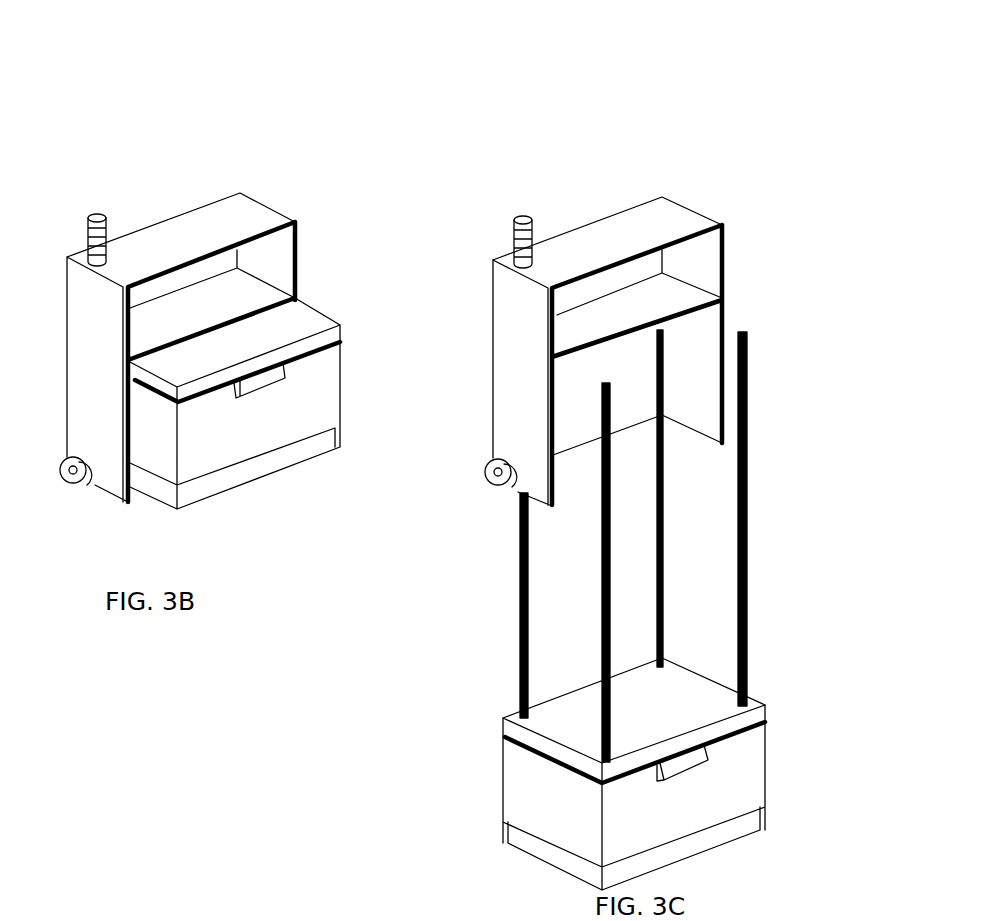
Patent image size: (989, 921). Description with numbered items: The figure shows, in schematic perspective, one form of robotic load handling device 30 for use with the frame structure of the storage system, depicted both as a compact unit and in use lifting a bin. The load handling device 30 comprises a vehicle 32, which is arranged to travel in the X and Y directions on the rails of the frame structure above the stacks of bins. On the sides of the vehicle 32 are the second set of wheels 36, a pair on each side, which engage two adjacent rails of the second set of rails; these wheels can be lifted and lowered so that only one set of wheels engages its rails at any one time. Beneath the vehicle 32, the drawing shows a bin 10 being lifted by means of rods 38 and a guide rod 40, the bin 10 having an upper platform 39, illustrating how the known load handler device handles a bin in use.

In FIG. 3B, the battery pack 10 is at (222, 430).
In FIG. 3C, the battery pack 10 is at (700, 812).
In FIG. 3B, the load handling device 30 is at (269, 147).
In FIG. 3C, the load handling device 30 is at (682, 144).
In FIG. 3C, the vehicle 32 is at (673, 221).
In FIG. 3B, the second set of wheels 36 is at (77, 483).
In FIG. 3C, the second set of wheels 36 is at (497, 483).
In FIG. 3C, the support rods 38 is at (523, 657).
In FIG. 3C, the base platform 39 is at (700, 698).
In FIG. 3C, the guide rod 40 is at (597, 373).